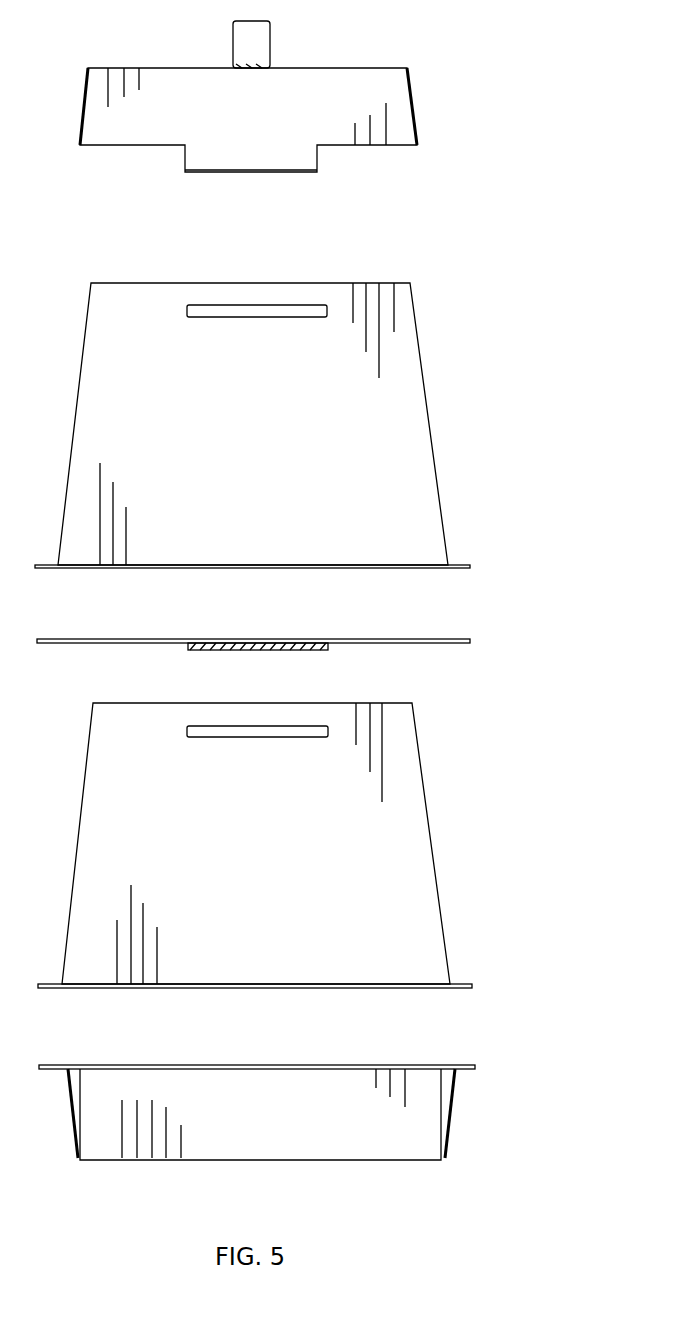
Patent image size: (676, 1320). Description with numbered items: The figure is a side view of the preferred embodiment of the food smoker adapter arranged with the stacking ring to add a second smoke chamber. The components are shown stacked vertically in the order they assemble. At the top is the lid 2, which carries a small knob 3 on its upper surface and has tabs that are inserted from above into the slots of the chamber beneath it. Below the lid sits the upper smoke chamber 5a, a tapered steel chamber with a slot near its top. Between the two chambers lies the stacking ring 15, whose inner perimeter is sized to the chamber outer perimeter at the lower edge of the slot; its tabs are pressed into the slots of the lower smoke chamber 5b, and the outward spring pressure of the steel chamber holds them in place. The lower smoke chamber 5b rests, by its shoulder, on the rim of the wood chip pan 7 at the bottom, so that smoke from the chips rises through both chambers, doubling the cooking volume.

The lid 2 is at (358, 68).
The knob 3 is at (232, 37).
The upper smoke chamber 5a is at (435, 425).
The stacking ring 15 is at (475, 640).
The lower smoke chamber 5b is at (432, 832).
The wood chip pan 7 is at (475, 1067).